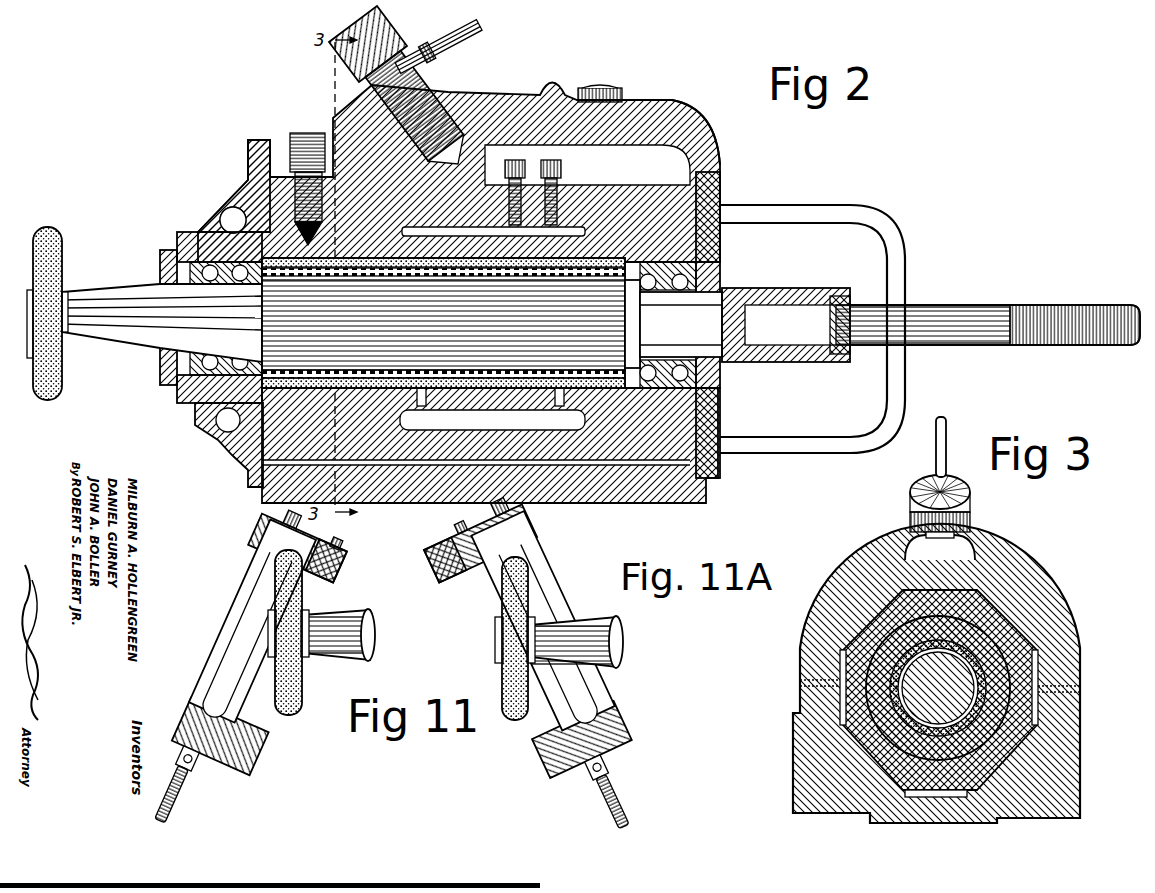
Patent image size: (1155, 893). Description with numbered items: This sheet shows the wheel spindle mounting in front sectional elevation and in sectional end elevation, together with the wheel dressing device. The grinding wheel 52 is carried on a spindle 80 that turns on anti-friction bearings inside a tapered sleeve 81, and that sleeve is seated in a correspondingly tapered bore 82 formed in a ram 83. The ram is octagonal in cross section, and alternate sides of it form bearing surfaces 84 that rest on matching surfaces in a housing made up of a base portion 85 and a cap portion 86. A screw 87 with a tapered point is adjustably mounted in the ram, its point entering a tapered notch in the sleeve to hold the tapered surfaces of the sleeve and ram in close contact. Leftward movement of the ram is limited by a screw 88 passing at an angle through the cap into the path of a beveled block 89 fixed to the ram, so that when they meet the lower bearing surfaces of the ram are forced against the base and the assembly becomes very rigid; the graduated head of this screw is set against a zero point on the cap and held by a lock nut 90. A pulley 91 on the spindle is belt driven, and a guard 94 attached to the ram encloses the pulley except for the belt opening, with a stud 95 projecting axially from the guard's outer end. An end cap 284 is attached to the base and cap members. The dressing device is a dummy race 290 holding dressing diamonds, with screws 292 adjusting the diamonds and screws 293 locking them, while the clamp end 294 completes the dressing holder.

In FIG. 2, the grinding wheel 52 is at (57, 228).
In FIG. 11, the grinding wheel 52 is at (292, 716).
In FIG. 11A, the grinding wheel 52 is at (508, 722).
In FIG. 2, the spindle 80 is at (100, 297).
In FIG. 3, the spindle 80 is at (950, 700).
In FIG. 11, the spindle 80 is at (334, 624).
In FIG. 11A, the spindle 80 is at (592, 617).
In FIG. 2, the tapered sleeve 81 is at (230, 207).
In FIG. 3, the tapered sleeve 81 is at (1003, 675).
In FIG. 2, the tapered bore 82 is at (633, 224).
In FIG. 3, the tapered bore 82 is at (1003, 660).
In FIG. 2, the ram 83 is at (703, 158).
In FIG. 3, the ram 83 is at (1015, 635).
In FIG. 3, the bearing surfaces 84 is at (1030, 590).
In FIG. 2, the base portion 85 is at (718, 492).
In FIG. 3, the base portion 85 is at (795, 709).
In FIG. 2, the cap portion 86 is at (667, 119).
In FIG. 3, the cap portion 86 is at (1003, 574).
In FIG. 2, the screw 87 is at (268, 187).
In FIG. 2, the screw 88 is at (452, 84).
In FIG. 2, the block 89 is at (570, 174).
In FIG. 2, the lock nut 90 is at (428, 64).
In FIG. 2, the pulley 91 is at (765, 282).
In FIG. 2, the guard 94 is at (873, 210).
In FIG. 2, the stud 95 is at (978, 306).
In FIG. 2, the end cap 284 is at (217, 437).
In FIG. 11, the dummy race 290 is at (187, 718).
In FIG. 11A, the dummy race 290 is at (618, 710).
In FIG. 11, the screws 292 is at (305, 528).
In FIG. 11A, the screws 292 is at (505, 538).
In FIG. 11, the screws 293 is at (267, 543).
In FIG. 11A, the screws 293 is at (542, 553).
In FIG. 11, the clamp end 294 is at (229, 765).
In FIG. 11A, the clamp end 294 is at (617, 750).